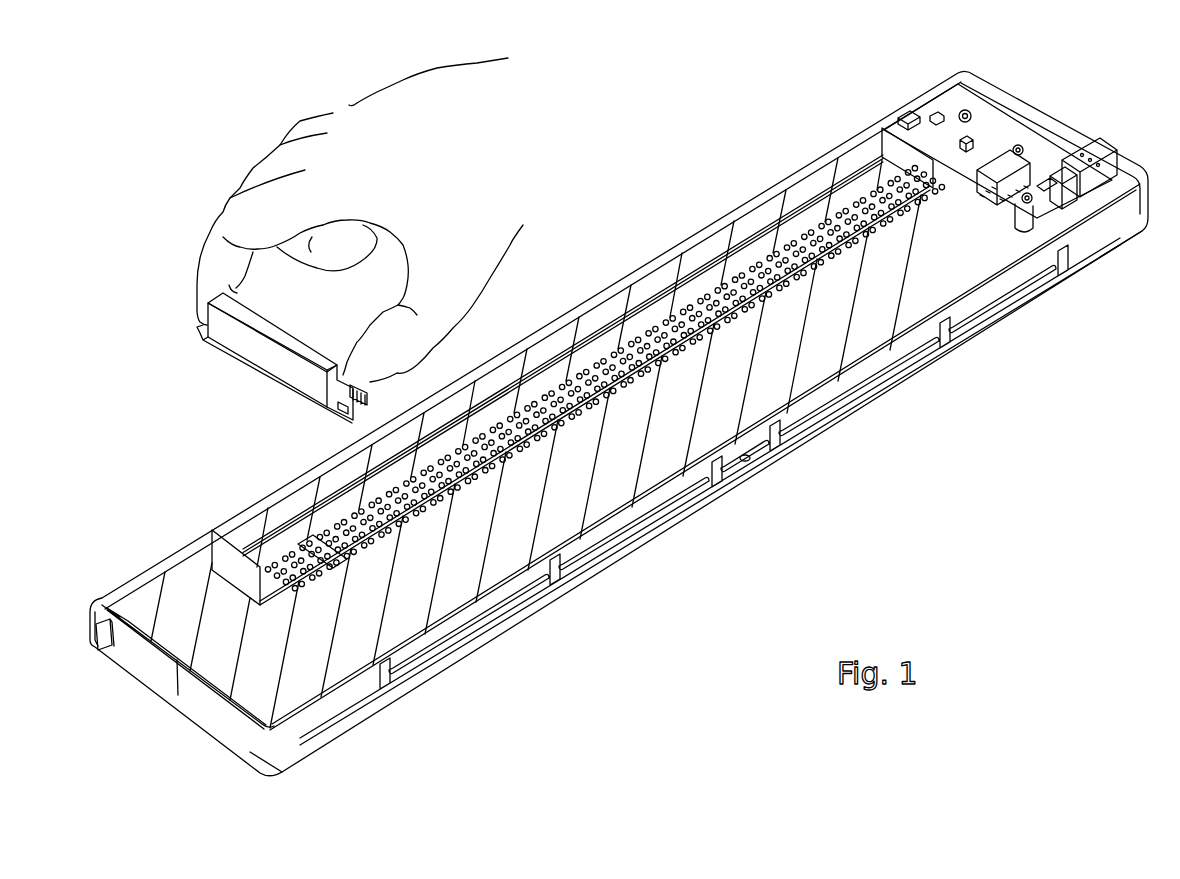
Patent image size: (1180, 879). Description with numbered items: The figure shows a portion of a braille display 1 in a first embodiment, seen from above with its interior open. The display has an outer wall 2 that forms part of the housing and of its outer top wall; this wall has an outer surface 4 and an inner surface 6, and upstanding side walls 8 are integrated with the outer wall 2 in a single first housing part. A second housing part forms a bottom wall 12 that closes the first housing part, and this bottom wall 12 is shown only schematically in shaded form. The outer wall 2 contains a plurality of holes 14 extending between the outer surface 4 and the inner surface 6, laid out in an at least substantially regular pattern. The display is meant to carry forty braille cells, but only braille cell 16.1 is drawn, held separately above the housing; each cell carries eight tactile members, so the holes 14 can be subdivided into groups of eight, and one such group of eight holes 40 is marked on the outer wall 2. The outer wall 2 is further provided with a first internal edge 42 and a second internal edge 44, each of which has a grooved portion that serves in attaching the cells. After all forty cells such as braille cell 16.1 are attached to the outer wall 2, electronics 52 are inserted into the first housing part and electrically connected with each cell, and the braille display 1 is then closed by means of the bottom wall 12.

The braille display 1 is at (821, 504).
The outer wall 2 is at (320, 668).
The outer surface 4 is at (207, 755).
The inner surface 6 is at (460, 578).
The upstanding side walls 8 is at (283, 758).
The bottom wall 12 is at (145, 595).
The holes 14 is at (435, 483).
The braille cell 16.1 is at (308, 392).
The group of eight holes 40 is at (337, 550).
The first internal edge 42 is at (250, 543).
The second internal edge 44 is at (387, 527).
The electronics 52 is at (998, 120).